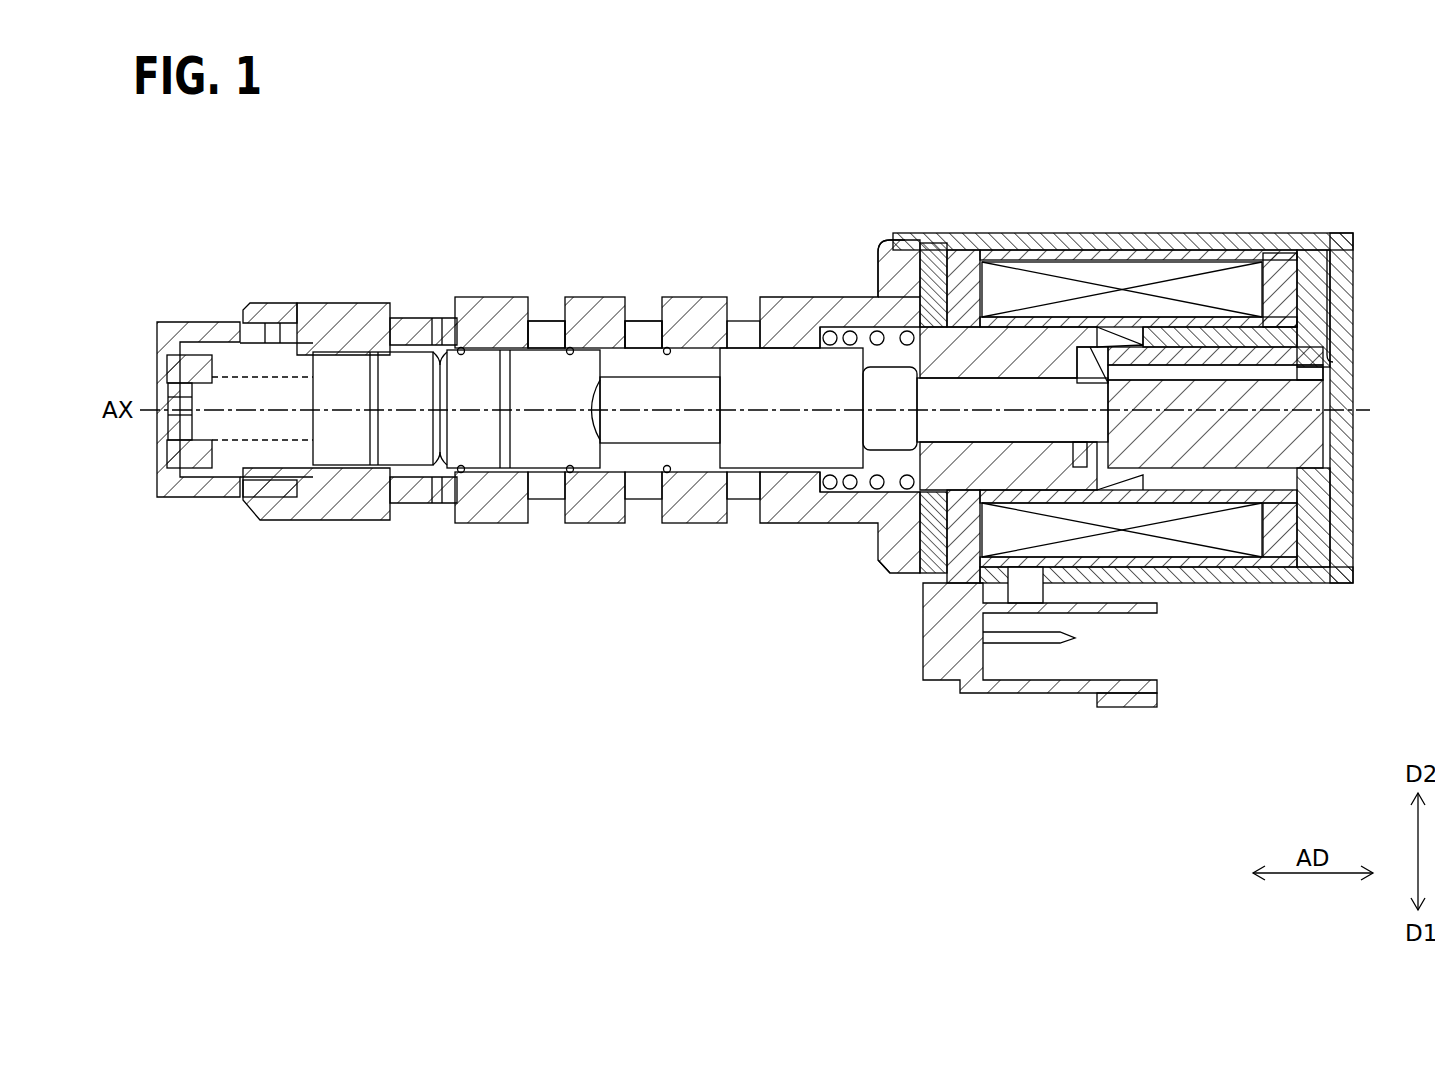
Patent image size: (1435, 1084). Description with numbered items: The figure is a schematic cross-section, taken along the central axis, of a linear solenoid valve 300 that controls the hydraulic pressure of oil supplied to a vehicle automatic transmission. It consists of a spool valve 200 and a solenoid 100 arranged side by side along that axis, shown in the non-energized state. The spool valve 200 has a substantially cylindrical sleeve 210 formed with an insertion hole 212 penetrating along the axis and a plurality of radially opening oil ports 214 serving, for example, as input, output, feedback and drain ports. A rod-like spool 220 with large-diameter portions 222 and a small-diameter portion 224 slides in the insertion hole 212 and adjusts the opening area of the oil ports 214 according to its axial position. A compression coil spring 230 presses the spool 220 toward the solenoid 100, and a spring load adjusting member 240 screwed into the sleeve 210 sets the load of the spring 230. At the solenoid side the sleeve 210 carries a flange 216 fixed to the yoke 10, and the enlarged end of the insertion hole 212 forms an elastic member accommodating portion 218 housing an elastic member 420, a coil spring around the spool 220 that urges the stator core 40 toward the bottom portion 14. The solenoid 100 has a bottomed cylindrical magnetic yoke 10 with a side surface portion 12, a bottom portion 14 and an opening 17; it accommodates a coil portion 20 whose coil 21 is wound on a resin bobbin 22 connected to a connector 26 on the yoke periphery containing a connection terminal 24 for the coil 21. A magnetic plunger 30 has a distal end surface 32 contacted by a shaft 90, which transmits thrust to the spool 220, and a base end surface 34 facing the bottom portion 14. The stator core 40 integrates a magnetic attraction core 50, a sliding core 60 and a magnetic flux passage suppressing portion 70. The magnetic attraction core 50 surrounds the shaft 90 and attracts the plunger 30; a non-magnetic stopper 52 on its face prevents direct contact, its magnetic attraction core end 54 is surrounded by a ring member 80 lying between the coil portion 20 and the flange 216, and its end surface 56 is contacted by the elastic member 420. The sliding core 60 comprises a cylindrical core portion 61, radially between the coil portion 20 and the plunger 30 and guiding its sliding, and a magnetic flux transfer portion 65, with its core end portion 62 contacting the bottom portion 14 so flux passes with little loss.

The linear solenoid valve 300 is at (296, 163).
The spool valve 200 is at (880, 738).
The solenoid 100 is at (1365, 738).
The sleeve 210 is at (483, 297).
The insertion hole 212 is at (350, 373).
The oil ports 214 is at (742, 522).
The flange 216 is at (903, 550).
The elastic member accommodating portion 218 is at (813, 353).
The spool 220 is at (737, 385).
The large-diameter portions 222 is at (548, 380).
The small-diameter portion 224 is at (642, 388).
The spring 230 is at (250, 330).
The spring load adjusting member 240 is at (193, 367).
The elastic member 420 is at (857, 490).
The yoke 10 is at (1358, 238).
The side surface portion 12 is at (983, 240).
The bottom portion 14 is at (1347, 330).
The opening 17 is at (877, 267).
The coil portion 20 is at (1357, 648).
The coil 21 is at (1200, 537).
The bobbin 22 is at (1280, 537).
The connection terminal 24 is at (1043, 640).
The connector 26 is at (1170, 699).
The plunger 30 is at (1290, 445).
The distal end surface 32 is at (1100, 330).
The base end surface 34 is at (1322, 425).
The stator core 40 is at (1275, 142).
The magnetic attraction core 50 is at (1053, 353).
The stopper 52 is at (1103, 495).
The magnetic attraction core end 54 is at (907, 293).
The end surface 56 is at (868, 320).
The sliding core 60 is at (1285, 298).
The core portion 61 is at (1330, 380).
The core end portion 62 is at (1333, 367).
The magnetic flux transfer portion 65 is at (1322, 292).
The magnetic flux passage suppressing portion 70 is at (1140, 320).
The ring member 80 is at (927, 265).
The shaft 90 is at (903, 510).